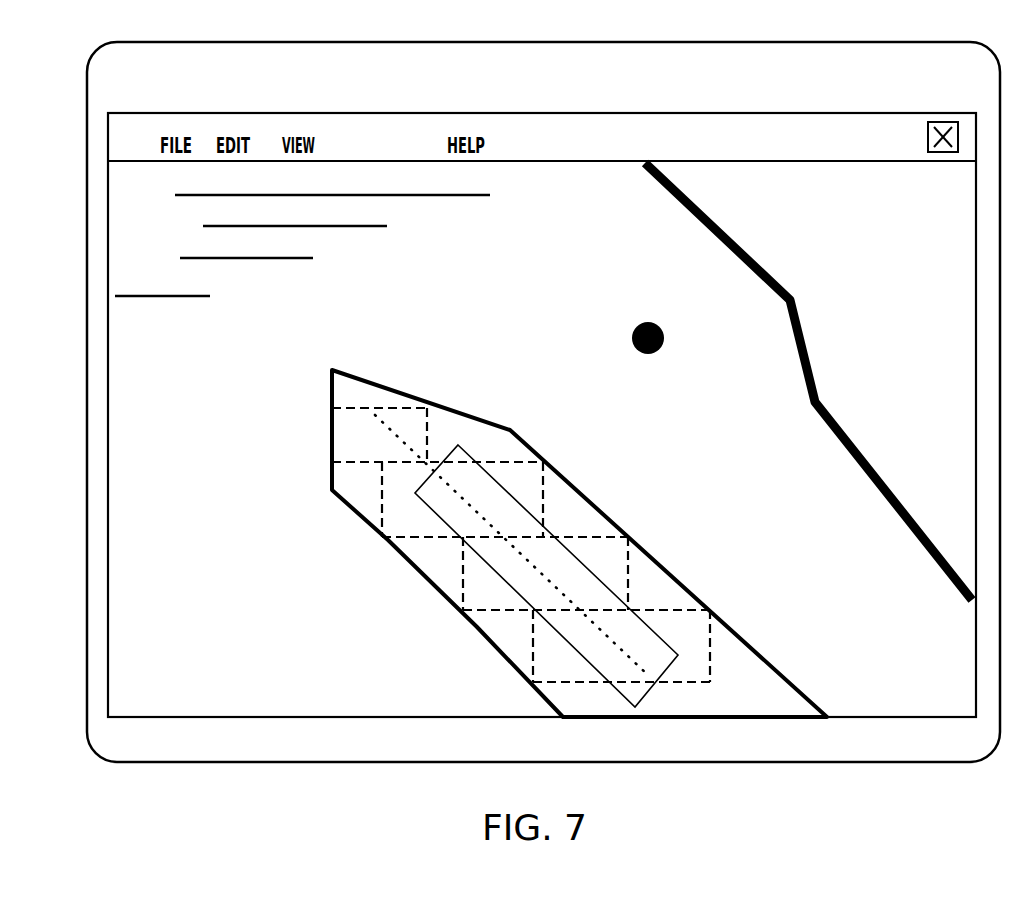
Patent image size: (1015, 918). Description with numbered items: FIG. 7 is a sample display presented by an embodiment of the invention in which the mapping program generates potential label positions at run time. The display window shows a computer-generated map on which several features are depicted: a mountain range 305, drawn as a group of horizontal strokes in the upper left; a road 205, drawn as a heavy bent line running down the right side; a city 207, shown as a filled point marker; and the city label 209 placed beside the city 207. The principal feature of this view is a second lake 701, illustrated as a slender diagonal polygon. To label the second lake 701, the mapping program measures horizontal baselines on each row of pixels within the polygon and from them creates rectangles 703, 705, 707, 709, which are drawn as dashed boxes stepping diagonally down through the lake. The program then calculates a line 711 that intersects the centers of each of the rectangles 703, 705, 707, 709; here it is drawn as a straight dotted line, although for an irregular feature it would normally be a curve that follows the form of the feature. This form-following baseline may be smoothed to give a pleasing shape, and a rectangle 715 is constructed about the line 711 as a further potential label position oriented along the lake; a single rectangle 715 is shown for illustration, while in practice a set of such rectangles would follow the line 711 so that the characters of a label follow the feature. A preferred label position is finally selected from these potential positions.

The road 205 is at (751, 256).
The city 207 is at (660, 349).
The city label 209 is at (580, 308).
The mountain range 305 is at (245, 267).
The second lake 701 is at (805, 689).
The rectangle 703 is at (427, 425).
The rectangle 705 is at (543, 498).
The rectangle 707 is at (628, 575).
The rectangle 709 is at (710, 647).
The line 711 is at (392, 425).
The rectangle 715 is at (430, 513).